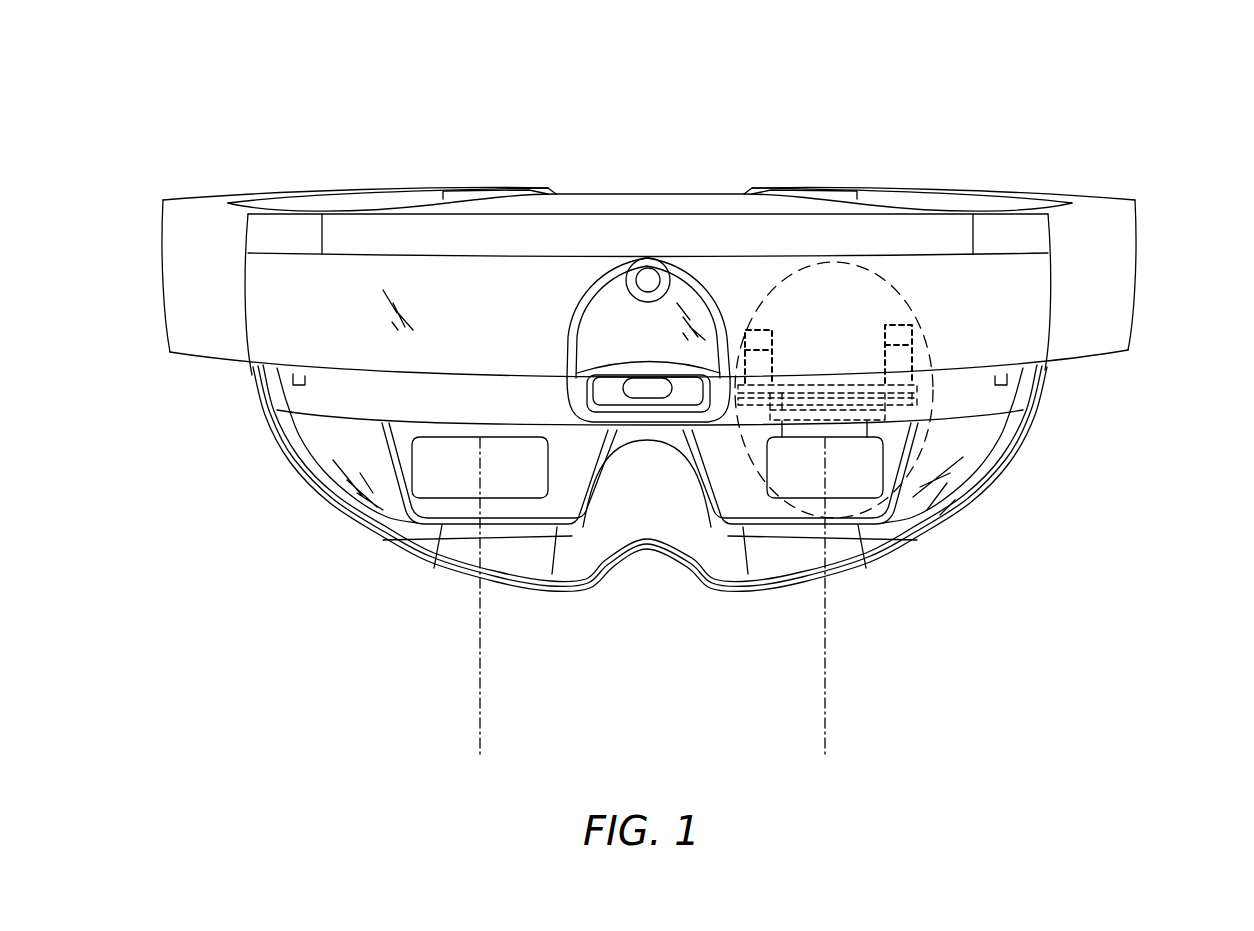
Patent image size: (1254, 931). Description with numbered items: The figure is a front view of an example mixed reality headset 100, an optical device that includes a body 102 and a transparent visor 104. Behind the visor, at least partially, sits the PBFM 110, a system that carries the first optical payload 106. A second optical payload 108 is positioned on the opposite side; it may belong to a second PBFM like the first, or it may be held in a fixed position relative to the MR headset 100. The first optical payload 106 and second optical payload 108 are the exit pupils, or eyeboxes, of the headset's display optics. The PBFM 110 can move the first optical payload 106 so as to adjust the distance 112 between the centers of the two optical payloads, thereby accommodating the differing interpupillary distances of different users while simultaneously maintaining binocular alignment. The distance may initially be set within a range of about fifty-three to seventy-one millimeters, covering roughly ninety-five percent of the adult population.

The mixed reality headset 100 is at (1147, 107).
The body 102 is at (1000, 338).
The transparent visor 104 is at (722, 452).
The first optical payload 106 is at (850, 477).
The second optical payload 108 is at (467, 475).
The PBFM 110 is at (775, 283).
The distance 112 is at (819, 703).